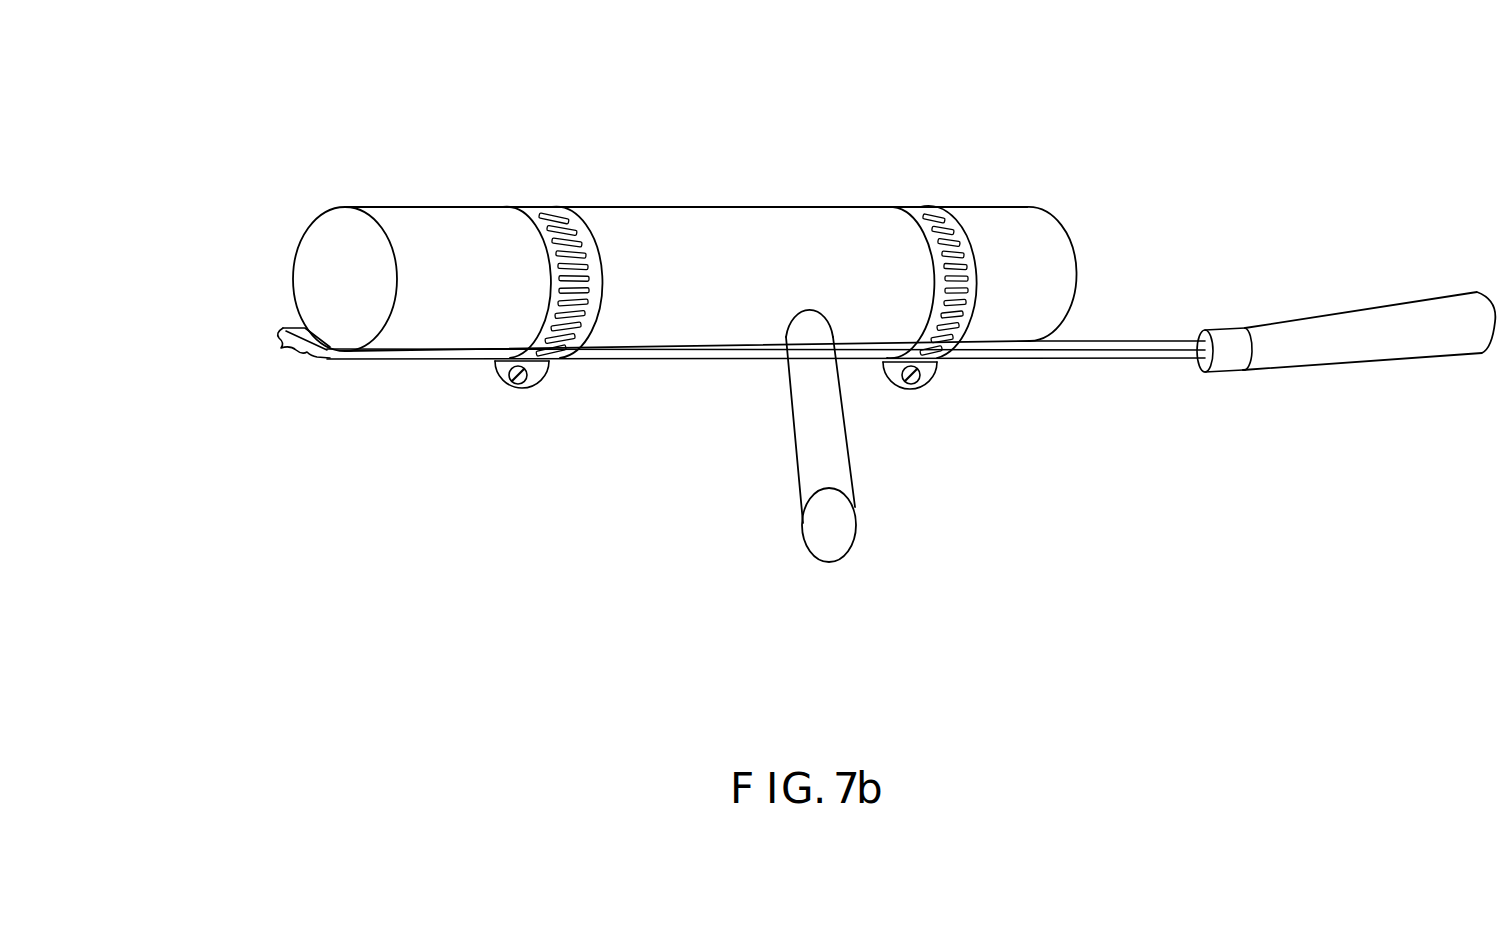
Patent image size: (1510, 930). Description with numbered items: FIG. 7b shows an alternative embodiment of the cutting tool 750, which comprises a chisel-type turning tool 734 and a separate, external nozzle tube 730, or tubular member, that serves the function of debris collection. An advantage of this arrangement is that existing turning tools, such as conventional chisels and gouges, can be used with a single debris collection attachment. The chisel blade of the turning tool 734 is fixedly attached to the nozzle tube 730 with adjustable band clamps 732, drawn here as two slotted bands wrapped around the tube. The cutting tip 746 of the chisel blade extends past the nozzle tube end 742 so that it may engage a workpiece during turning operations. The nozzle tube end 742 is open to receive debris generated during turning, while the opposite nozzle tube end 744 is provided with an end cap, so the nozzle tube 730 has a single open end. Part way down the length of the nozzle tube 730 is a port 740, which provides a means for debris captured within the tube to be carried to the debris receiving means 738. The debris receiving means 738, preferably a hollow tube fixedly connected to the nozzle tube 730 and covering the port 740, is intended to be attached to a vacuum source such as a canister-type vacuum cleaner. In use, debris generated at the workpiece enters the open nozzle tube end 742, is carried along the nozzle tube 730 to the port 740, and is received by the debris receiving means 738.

The cutting tool 750 is at (840, 52).
The nozzle tube 730 is at (312, 255).
The adjustable band clamps 732 is at (915, 207).
The turning tool 734 is at (392, 359).
The debris receiving means 738 is at (803, 525).
The port 740 is at (803, 327).
The nozzle tube end 742 is at (348, 207).
The nozzle tube end 744 is at (1057, 218).
The cutting tip 746 is at (278, 345).